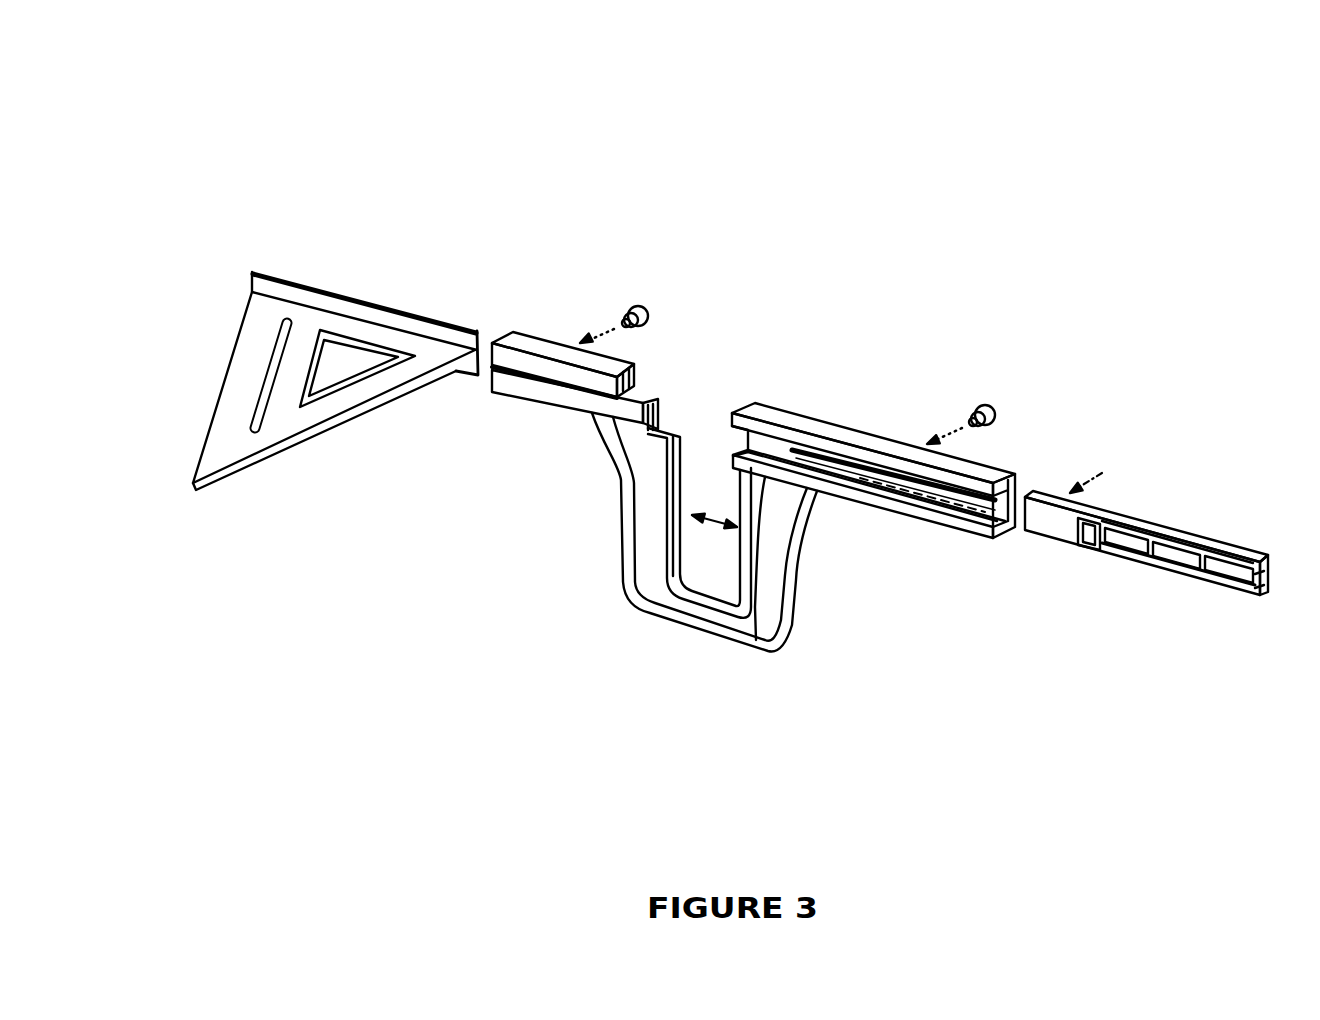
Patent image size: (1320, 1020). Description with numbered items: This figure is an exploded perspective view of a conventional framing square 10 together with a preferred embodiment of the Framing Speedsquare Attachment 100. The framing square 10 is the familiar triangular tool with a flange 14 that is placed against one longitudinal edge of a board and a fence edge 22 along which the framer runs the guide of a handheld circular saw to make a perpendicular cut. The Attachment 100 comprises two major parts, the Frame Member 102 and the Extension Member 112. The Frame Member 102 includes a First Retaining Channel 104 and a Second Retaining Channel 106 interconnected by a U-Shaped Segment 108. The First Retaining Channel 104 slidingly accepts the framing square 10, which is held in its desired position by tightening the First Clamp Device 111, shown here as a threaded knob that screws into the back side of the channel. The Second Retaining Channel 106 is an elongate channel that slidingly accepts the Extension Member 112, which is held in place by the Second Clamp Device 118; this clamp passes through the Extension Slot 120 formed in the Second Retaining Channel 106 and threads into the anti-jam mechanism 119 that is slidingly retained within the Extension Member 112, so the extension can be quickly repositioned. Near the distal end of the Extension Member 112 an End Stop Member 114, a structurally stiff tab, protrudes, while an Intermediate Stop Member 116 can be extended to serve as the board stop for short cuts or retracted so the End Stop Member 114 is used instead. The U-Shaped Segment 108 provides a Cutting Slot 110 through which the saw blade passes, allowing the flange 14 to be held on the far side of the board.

The framing square 10 is at (307, 332).
The flange 14 is at (367, 302).
The fence edge 22 is at (330, 423).
The Framing Speedsquare Attachment 100 is at (917, 162).
The Frame Member 102 is at (772, 413).
The First Retaining Channel 104 is at (510, 337).
The Second Retaining Channel 106 is at (902, 508).
The U-Shaped Segment 108 is at (697, 613).
The Cutting Slot 110 is at (692, 515).
The First Clamp Device 111 is at (640, 302).
The Extension Member 112 is at (1130, 515).
The End Stop Member 114 is at (1270, 587).
The Intermediate Stop Member 116 is at (1100, 550).
The Second Clamp Device 118 is at (997, 408).
The anti-jam mechanism 119 is at (1075, 460).
The Extension Slot 120 is at (785, 468).